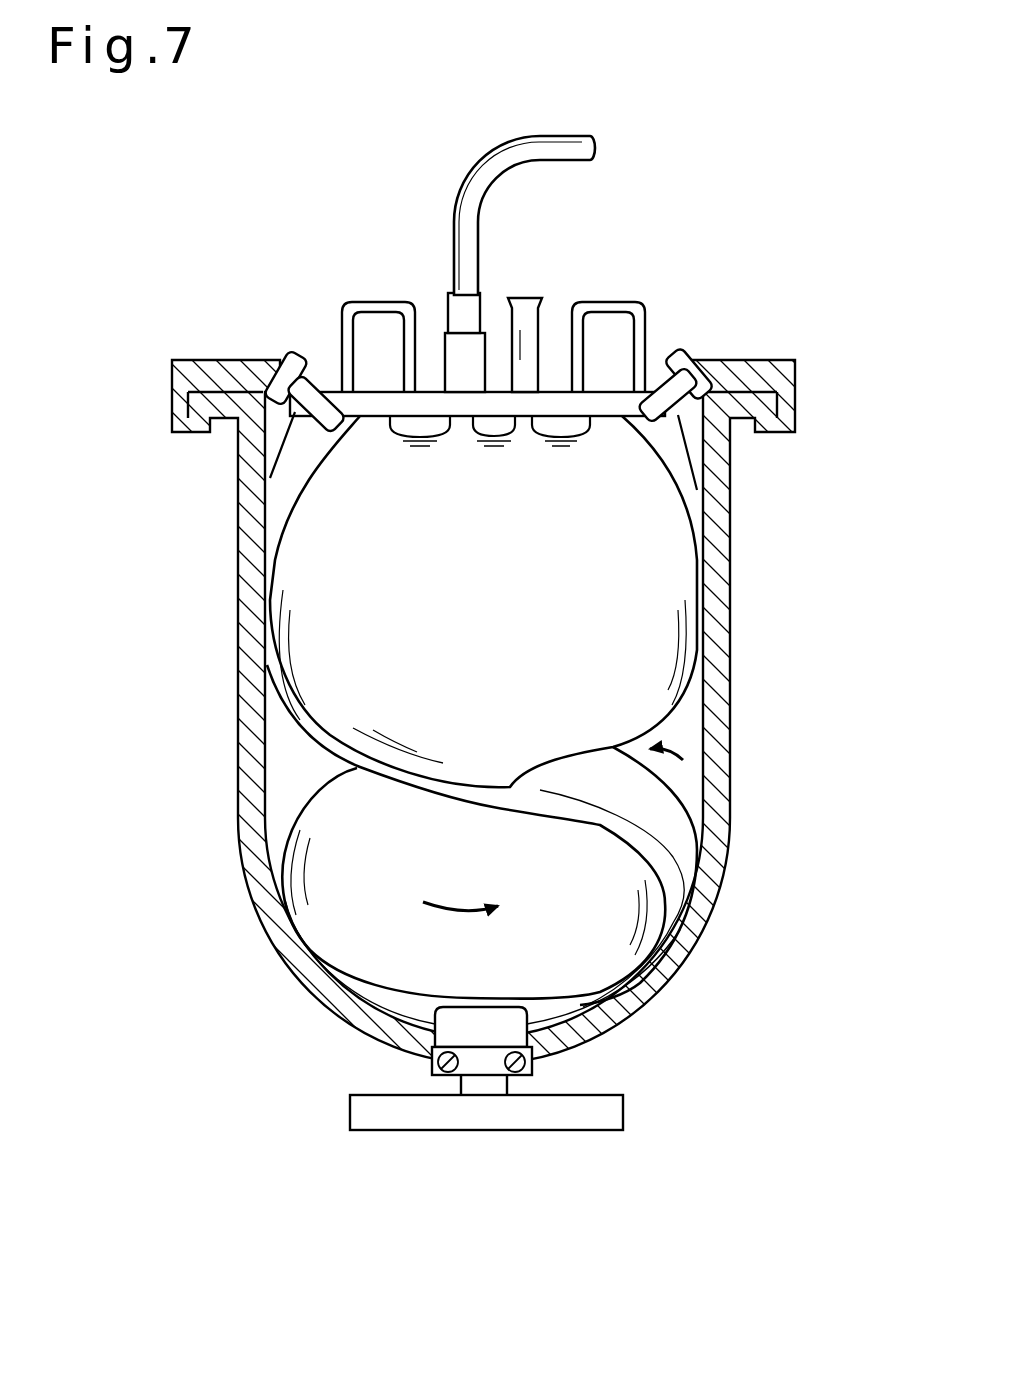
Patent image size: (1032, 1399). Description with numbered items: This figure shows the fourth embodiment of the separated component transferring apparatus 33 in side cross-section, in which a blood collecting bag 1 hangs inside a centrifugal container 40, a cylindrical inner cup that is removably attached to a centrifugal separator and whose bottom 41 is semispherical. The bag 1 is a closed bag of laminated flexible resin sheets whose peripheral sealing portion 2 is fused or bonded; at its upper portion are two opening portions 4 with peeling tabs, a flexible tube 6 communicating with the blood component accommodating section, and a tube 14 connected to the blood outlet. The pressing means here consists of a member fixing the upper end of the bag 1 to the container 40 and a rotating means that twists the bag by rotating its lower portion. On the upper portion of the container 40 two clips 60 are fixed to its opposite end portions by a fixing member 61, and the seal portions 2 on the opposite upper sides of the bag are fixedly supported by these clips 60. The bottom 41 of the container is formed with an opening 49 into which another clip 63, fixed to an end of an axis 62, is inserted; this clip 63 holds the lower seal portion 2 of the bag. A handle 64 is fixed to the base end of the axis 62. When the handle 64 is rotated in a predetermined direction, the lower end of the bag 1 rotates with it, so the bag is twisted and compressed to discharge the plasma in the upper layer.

The blood collecting bag 1 is at (312, 627).
The peripheral sealing portion 2 is at (310, 455).
The opening portions 4 is at (380, 330).
The flexible tube 6 is at (527, 320).
The tube 14 is at (503, 167).
The separated component transferring apparatus 33 is at (824, 206).
The centrifugal container 40 is at (735, 604).
The bottom 41 is at (660, 1000).
The opening 49 is at (545, 1052).
The clips 60 is at (310, 397).
The fixing member 61 is at (212, 378).
The axis 62 is at (485, 1083).
The clip 63 is at (462, 1025).
The handle 64 is at (423, 1113).